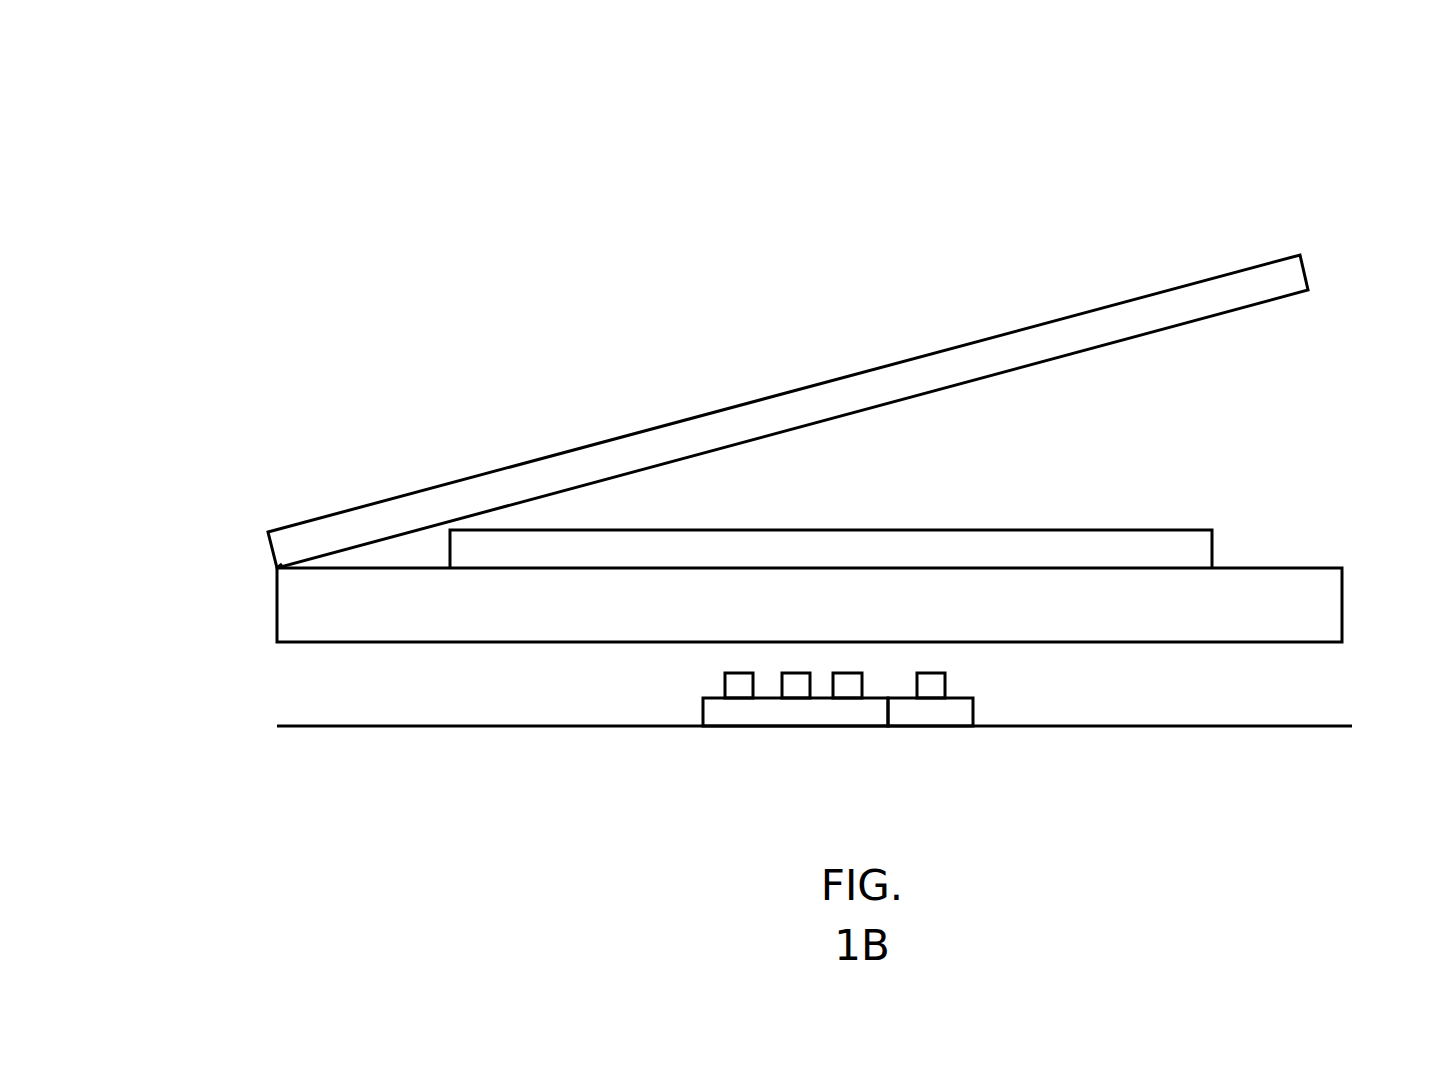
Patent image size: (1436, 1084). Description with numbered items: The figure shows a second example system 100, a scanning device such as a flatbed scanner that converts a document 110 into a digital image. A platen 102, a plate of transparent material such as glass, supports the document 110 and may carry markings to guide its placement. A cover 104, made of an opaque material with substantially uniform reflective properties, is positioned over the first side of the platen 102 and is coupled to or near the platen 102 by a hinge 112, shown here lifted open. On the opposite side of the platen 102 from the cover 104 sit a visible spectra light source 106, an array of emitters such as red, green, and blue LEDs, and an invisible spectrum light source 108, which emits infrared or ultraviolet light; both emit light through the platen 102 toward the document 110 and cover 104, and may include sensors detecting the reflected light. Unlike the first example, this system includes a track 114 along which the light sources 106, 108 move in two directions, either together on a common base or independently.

The system 100 is at (194, 72).
The platen 102 is at (1342, 598).
The cover 104 is at (912, 358).
The visible spectra light source 106 is at (888, 740).
The invisible spectrum light source 108 is at (973, 740).
The document 110 is at (1017, 529).
The hinge 112 is at (278, 568).
The track 114 is at (307, 725).